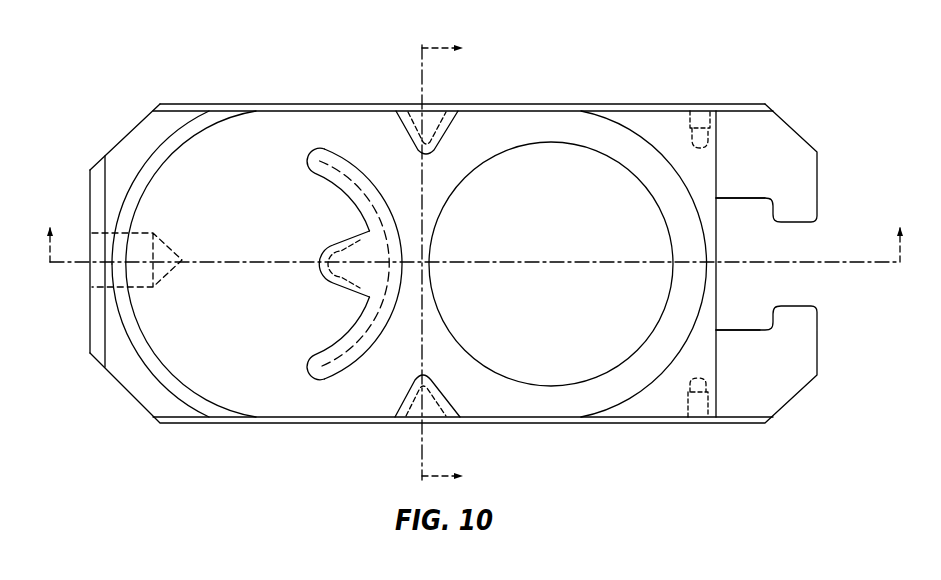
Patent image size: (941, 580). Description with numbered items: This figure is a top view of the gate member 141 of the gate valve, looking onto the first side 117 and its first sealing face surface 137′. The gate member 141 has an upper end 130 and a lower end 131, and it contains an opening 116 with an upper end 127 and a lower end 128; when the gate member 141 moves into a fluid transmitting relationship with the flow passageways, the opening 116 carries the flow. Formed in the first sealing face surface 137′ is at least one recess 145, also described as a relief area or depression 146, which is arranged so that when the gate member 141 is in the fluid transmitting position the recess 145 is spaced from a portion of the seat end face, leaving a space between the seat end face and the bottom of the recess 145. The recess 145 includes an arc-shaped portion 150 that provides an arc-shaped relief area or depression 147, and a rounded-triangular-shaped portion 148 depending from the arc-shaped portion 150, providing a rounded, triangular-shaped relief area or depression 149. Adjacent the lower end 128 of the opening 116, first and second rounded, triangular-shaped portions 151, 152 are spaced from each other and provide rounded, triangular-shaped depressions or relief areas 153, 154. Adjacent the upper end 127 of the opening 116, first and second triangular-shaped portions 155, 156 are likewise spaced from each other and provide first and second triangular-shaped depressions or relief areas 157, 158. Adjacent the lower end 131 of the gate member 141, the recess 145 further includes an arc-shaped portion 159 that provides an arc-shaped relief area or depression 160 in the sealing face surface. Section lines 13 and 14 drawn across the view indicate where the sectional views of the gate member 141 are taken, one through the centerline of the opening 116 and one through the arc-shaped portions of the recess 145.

The opening 116 is at (582, 182).
The first side 117 is at (257, 397).
The upper end of the opening 127 is at (676, 246).
The lower end of the opening 128 is at (442, 297).
The upper end 130 is at (790, 124).
The lower end 131 is at (135, 406).
The first sealing face surface 137′ is at (197, 188).
The gate member 141 is at (792, 68).
The recess 145 is at (200, 92).
The relief area or depression 146 is at (388, 254).
The arc-shaped relief area or depression 147 is at (363, 328).
The rounded-triangular-shaped portion 148 is at (326, 247).
The rounded triangular-shaped relief area or depression 149 is at (338, 270).
The arc-shaped portion 150 is at (378, 228).
The first rounded triangular-shaped portion 151 is at (412, 106).
The second rounded triangular-shaped portion 152 is at (413, 409).
The rounded triangular-shaped depression or relief area 153 is at (433, 135).
The rounded triangular-shaped depression or relief area 154 is at (434, 406).
The first triangular-shaped portion 155 is at (683, 112).
The second triangular-shaped portion 156 is at (668, 414).
The first triangular-shaped depression or relief area 157 is at (703, 166).
The second triangular-shaped depression or relief area 158 is at (702, 372).
The arc-shaped portion or recess 159 is at (145, 358).
The arc-shaped relief area or depression 160 is at (150, 152).
The section line 13- 13 is at (476, 224).
The section line 14- 14 is at (459, 265).